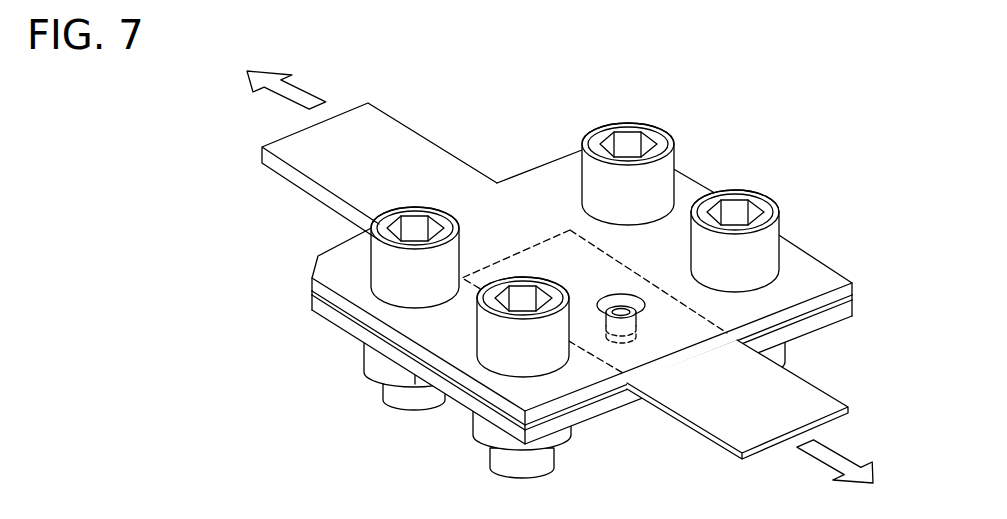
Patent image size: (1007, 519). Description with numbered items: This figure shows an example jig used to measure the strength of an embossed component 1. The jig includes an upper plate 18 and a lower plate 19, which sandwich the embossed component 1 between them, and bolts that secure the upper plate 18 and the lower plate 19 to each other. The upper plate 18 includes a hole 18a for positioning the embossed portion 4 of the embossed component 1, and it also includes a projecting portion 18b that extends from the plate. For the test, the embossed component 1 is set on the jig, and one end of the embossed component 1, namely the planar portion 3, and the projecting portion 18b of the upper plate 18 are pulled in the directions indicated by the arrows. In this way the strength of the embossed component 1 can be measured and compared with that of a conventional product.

The embossed component 1 is at (672, 422).
The planar portion 3 is at (792, 393).
The embossed portion 4 is at (627, 302).
The upper plate 18 is at (553, 273).
The hole 18a is at (607, 297).
The projecting portion 18b is at (423, 160).
The lower plate 19 is at (330, 318).